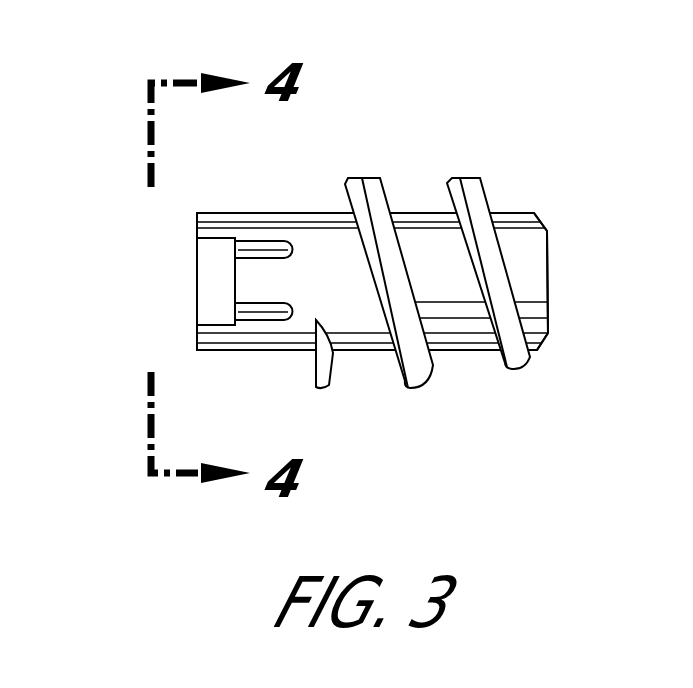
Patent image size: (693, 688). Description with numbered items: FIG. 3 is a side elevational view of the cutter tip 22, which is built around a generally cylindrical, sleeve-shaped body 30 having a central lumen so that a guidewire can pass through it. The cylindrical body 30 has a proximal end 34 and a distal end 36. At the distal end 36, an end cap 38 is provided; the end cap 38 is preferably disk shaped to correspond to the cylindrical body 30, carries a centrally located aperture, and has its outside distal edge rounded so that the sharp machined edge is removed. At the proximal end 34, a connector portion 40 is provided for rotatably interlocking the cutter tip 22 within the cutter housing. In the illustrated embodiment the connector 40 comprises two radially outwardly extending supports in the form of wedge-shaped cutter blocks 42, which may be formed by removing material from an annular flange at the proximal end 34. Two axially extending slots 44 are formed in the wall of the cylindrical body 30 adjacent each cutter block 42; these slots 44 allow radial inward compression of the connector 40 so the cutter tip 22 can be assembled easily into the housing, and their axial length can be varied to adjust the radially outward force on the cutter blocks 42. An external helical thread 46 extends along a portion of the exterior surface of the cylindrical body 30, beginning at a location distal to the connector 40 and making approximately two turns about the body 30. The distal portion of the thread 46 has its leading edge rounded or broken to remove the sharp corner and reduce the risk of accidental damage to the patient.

The cutter tip 22 is at (347, 240).
The cylindrical body 30 is at (347, 209).
The proximal end 34 is at (239, 219).
The distal end 36 is at (558, 250).
The end cap 38 is at (550, 313).
The connector portion 40 is at (235, 198).
The cutter blocks 42 is at (205, 288).
The axially extending slots 44 is at (292, 306).
The external helical thread 46 is at (413, 367).